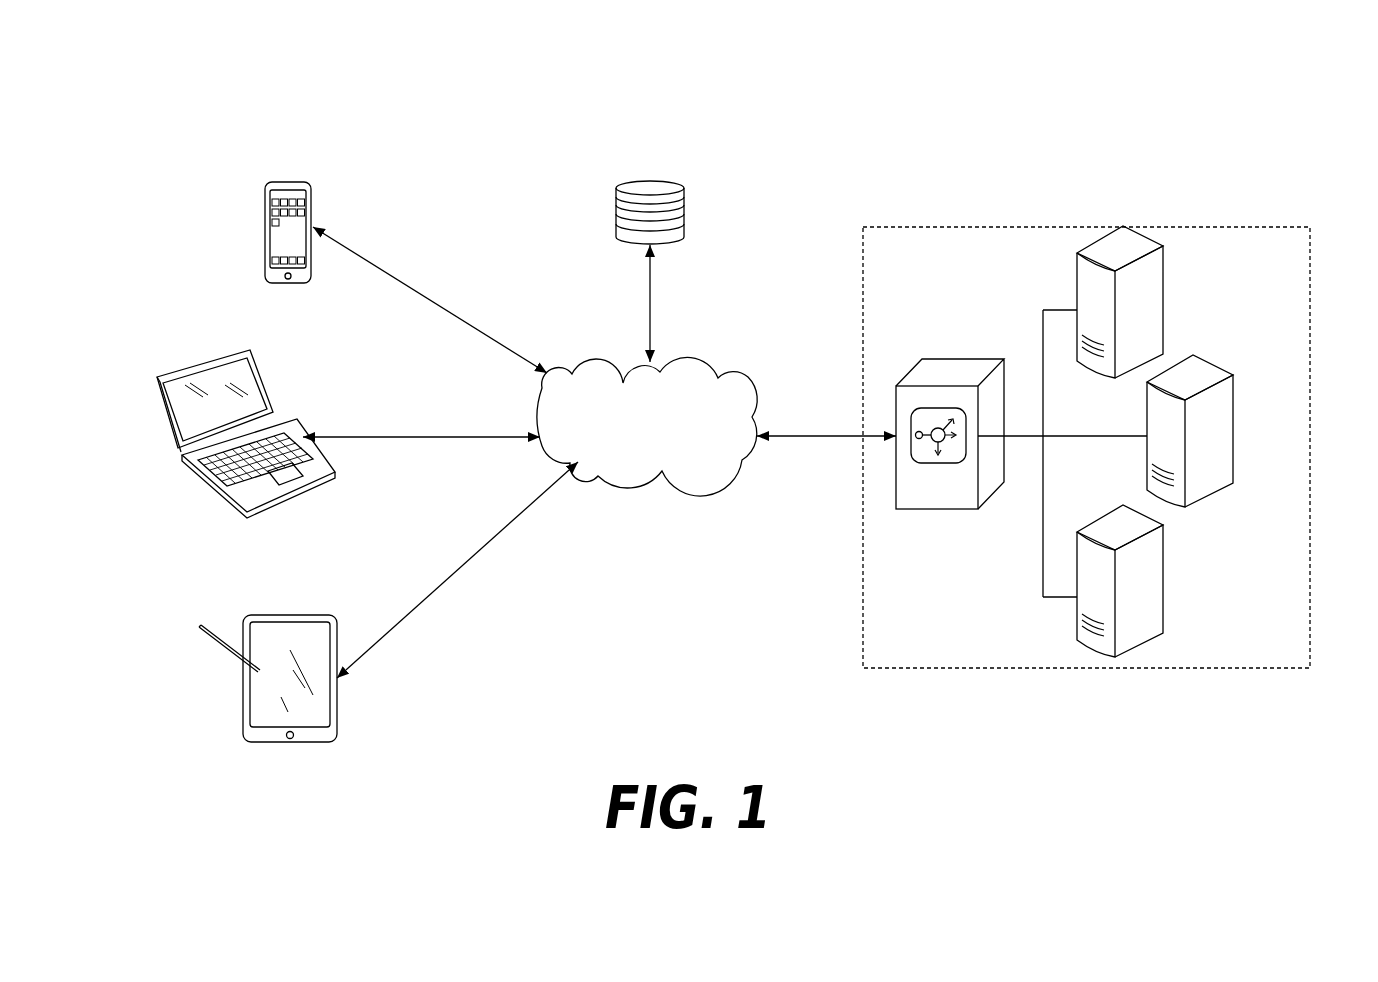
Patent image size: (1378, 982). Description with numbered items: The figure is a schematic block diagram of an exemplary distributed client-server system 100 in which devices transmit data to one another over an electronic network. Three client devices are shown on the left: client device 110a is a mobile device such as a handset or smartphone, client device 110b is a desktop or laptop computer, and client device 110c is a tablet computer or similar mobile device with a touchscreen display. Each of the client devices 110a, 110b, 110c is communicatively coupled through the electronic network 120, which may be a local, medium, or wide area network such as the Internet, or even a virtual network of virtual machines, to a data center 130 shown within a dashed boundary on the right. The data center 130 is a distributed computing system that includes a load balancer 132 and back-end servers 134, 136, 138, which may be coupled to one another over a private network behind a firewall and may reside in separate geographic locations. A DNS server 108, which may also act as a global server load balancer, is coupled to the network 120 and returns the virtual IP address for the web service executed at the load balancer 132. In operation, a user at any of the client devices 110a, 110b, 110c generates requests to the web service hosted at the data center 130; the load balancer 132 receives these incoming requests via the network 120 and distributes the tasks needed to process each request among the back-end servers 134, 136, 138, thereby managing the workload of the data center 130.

The distributed client-server system 100 is at (1270, 101).
The DNS server 108 is at (684, 190).
The client device 110a is at (313, 200).
The client device 110b is at (262, 365).
The client device 110c is at (338, 626).
The electronic network 120 is at (728, 378).
The data center 130 is at (1312, 298).
The load balancer 132 is at (945, 358).
The back-end server 134 is at (1164, 297).
The back-end server 136 is at (1233, 427).
The back-end server 138 is at (1163, 577).